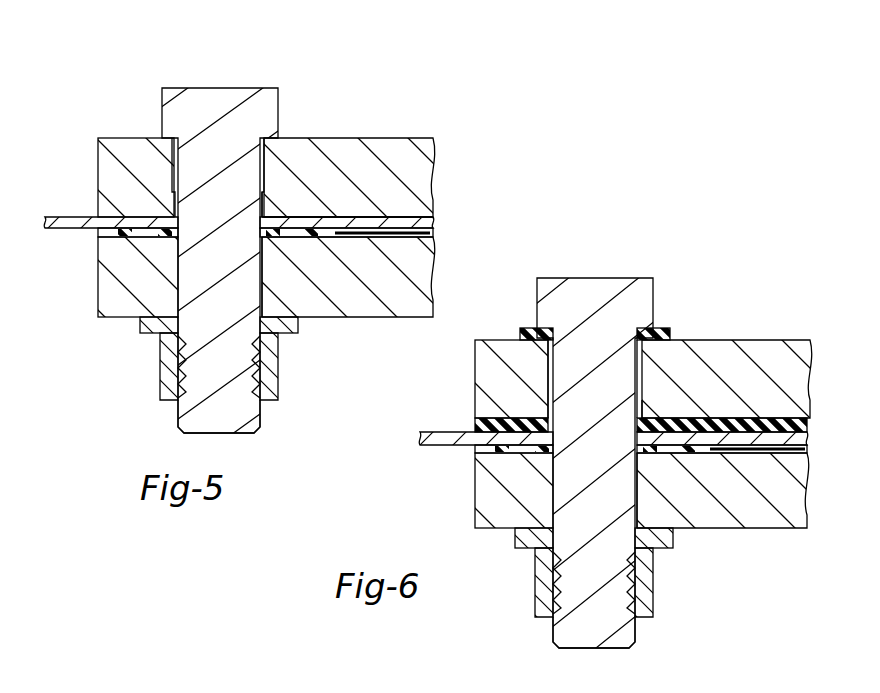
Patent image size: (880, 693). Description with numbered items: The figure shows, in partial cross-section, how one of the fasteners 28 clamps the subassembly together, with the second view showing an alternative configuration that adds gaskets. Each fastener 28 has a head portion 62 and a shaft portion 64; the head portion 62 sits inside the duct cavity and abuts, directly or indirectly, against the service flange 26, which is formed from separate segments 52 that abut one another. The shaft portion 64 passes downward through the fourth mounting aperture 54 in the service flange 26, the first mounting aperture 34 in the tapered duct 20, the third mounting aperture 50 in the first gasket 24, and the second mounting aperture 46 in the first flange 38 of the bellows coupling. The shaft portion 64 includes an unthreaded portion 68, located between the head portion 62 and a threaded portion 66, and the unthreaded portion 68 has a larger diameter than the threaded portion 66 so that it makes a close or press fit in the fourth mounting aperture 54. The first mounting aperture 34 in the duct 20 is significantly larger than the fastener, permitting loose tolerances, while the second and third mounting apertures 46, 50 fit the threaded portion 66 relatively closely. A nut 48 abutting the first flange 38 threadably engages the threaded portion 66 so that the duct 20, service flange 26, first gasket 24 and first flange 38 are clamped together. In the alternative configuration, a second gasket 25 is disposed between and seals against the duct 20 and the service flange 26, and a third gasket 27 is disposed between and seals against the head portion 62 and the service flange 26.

In FIG. 5, the tapered duct 20 is at (72, 215).
In FIG. 6, the tapered duct 20 is at (446, 431).
In FIG. 5, the first gasket 24 is at (110, 233).
In FIG. 6, the first gasket 24 is at (485, 450).
In FIG. 6, the second gasket 25 is at (512, 420).
In FIG. 5, the service flange 26 is at (392, 146).
In FIG. 6, the service flange 26 is at (792, 342).
In FIG. 6, the third gasket 27 is at (527, 327).
In FIG. 5, the fastener 28 is at (188, 80).
In FIG. 6, the fastener 28 is at (618, 264).
In FIG. 5, the first mounting aperture 34 is at (285, 220).
In FIG. 6, the first mounting aperture 34 is at (698, 420).
In FIG. 5, the first flange 38 is at (105, 290).
In FIG. 6, the first flange 38 is at (480, 503).
In FIG. 5, the second mounting aperture 46 is at (270, 290).
In FIG. 6, the second mounting aperture 46 is at (645, 500).
In FIG. 5, the nut 48 is at (165, 372).
In FIG. 6, the nut 48 is at (540, 588).
In FIG. 5, the third mounting aperture 50 is at (300, 240).
In FIG. 6, the third mounting aperture 50 is at (670, 455).
In FIG. 5, the segment 52 is at (105, 155).
In FIG. 6, the segment 52 is at (480, 365).
In FIG. 5, the fourth mounting aperture 54 is at (272, 180).
In FIG. 6, the fourth mounting aperture 54 is at (645, 388).
In FIG. 5, the head portion 62 is at (220, 87).
In FIG. 6, the head portion 62 is at (578, 277).
In FIG. 5, the shaft portion 64 is at (200, 172).
In FIG. 6, the shaft portion 64 is at (585, 568).
In FIG. 5, the threaded portion 66 is at (225, 380).
In FIG. 6, the threaded portion 66 is at (600, 598).
In FIG. 5, the unthreaded portion 68 is at (262, 148).
In FIG. 6, the unthreaded portion 68 is at (643, 363).